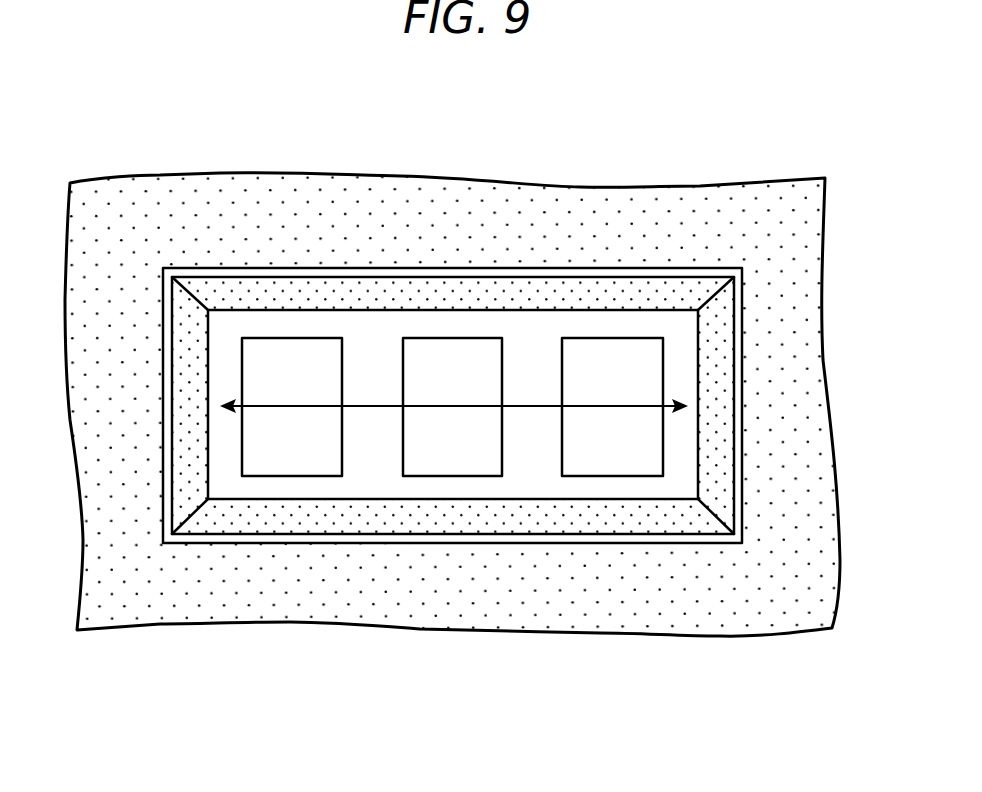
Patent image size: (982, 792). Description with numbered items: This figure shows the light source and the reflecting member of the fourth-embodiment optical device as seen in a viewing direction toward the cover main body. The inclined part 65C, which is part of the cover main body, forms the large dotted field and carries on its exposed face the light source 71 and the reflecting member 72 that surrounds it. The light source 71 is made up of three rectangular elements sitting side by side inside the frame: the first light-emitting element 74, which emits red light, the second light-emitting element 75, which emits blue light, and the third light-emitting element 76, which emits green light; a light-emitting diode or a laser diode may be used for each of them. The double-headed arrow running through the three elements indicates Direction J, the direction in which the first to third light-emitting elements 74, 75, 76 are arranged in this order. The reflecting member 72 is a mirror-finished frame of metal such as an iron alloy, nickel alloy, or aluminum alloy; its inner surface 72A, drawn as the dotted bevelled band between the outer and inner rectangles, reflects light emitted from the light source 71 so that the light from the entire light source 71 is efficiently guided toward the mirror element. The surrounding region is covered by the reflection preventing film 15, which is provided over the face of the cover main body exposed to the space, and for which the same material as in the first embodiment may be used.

The reflection preventing film 15 is at (822, 383).
The reflecting member 72 is at (384, 485).
The inner surface 72A is at (188, 503).
The inclined part 65C is at (529, 355).
The Direction J is at (366, 404).
The light source 71 is at (452, 544).
The first light-emitting element 74 is at (583, 453).
The second light-emitting element 75 is at (453, 450).
The third light-emitting element 76 is at (322, 453).